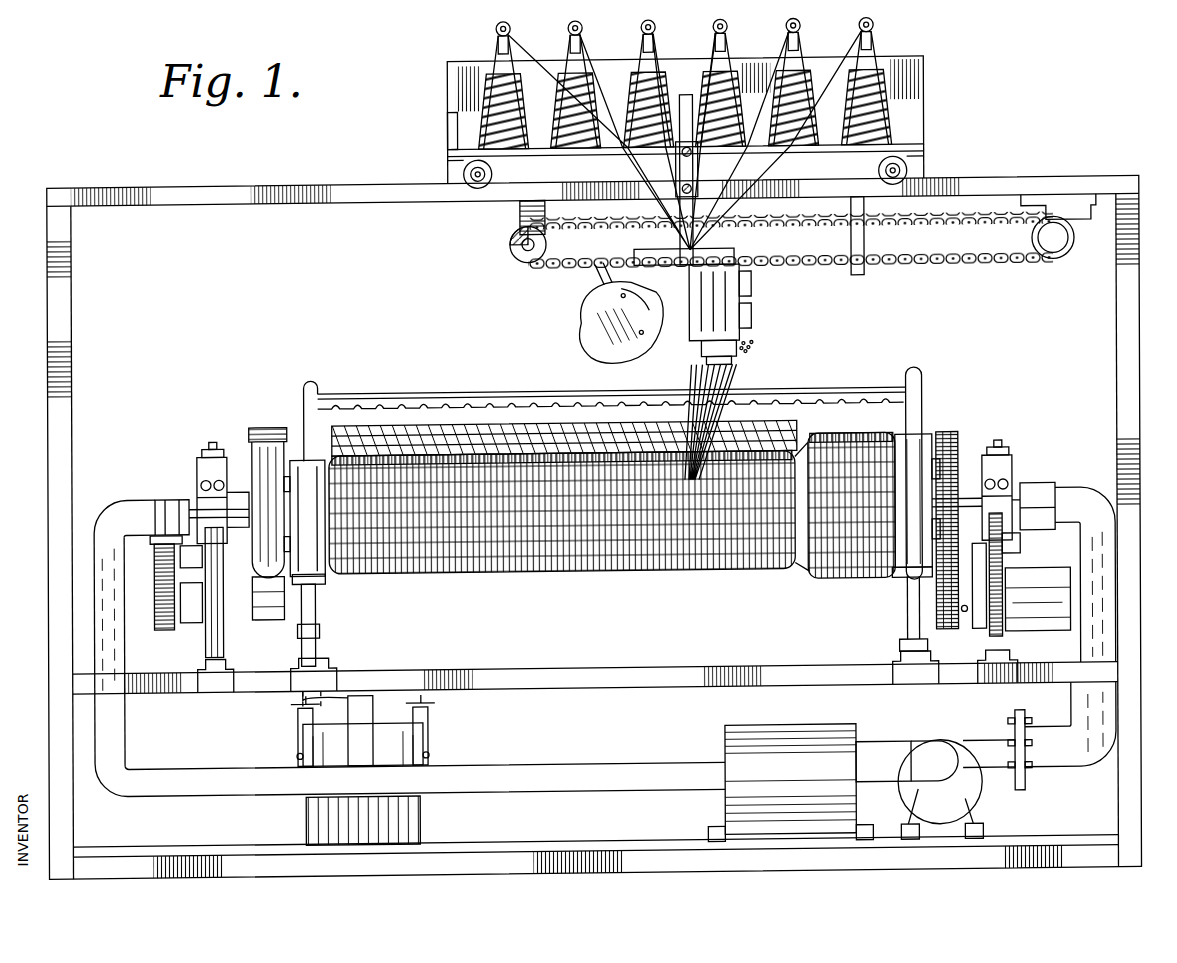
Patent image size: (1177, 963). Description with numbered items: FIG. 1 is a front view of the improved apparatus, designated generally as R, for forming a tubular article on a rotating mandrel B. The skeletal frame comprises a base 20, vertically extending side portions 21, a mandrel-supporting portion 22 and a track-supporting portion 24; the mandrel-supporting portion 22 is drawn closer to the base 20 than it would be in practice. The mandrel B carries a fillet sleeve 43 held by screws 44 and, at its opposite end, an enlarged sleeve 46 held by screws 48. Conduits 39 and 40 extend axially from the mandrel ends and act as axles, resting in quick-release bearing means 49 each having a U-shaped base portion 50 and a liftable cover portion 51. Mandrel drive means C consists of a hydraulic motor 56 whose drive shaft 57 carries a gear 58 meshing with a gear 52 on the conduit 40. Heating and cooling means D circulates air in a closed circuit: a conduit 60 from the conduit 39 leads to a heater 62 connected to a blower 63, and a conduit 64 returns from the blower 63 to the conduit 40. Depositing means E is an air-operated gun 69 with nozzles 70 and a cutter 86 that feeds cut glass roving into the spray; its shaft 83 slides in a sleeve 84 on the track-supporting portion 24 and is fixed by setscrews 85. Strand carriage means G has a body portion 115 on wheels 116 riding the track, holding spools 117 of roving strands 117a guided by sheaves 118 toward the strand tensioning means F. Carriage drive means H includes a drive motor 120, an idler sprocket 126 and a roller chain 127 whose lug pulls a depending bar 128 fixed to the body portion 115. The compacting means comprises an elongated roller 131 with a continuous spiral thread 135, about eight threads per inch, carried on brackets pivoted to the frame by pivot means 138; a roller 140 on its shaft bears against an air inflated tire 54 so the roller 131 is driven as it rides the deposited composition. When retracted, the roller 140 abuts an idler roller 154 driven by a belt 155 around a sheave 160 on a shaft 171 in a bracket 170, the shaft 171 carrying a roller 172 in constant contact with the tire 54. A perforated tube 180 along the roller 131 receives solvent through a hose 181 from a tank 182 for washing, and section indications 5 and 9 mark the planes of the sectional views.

The base 20 is at (535, 856).
The vertically extending side portions 21 is at (46, 386).
The mandrel-supporting portion 22 is at (540, 690).
The track-supporting portion 24 is at (1010, 200).
The conduit 39 is at (178, 504).
The conduit 40 is at (1030, 495).
The fillet sleeve 43 is at (322, 585).
The screws 44 is at (300, 542).
The sleeve 46 is at (893, 585).
The screws 48 is at (902, 532).
The bearing means 49 is at (183, 444).
The U-shaped base portion 50 is at (1018, 552).
The cover portion 51 is at (196, 470).
The gear 52 is at (948, 445).
The air inflated tire 54 is at (250, 446).
The motor 56 is at (1040, 592).
The drive shaft 57 is at (986, 648).
The gear 58 is at (970, 620).
The conduit 60 is at (97, 636).
The heater 62 is at (785, 748).
The blower 63 is at (945, 752).
The conduit 64 is at (1113, 622).
The gun 69 is at (740, 300).
The nozzle 70 is at (735, 356).
The shaft 83 is at (688, 103).
The sleeve 84 is at (675, 174).
The setscrews 85 is at (694, 172).
The cutter 86 is at (586, 344).
The body portion 115 is at (918, 130).
The wheels 116 is at (462, 178).
The spools 117 is at (882, 98).
The roving strands 117a is at (744, 362).
The sheaves 118 is at (873, 38).
The drive motor 120 is at (1062, 268).
The idler sprocket 126 is at (509, 255).
The roller chain 127 is at (535, 245).
The depending bar 128 is at (866, 248).
The elongated roller 131 is at (796, 433).
The continuous spiral thread 135 is at (390, 440).
The pivot means 138 is at (322, 660).
The roller 140 is at (283, 440).
The idler roller 154 is at (165, 546).
The belt 155 is at (182, 568).
The sheave 160 is at (182, 594).
The bracket 170 is at (205, 656).
The shaft 171 is at (170, 632).
The roller 172 is at (313, 612).
The perforated tube 180 is at (825, 398).
The hose 181 is at (300, 706).
The tank 182 is at (420, 828).
The section line 5 is at (237, 440).
The section line 9 is at (620, 256).
The mandrel B is at (406, 595).
The mandrel drive means C is at (1072, 476).
The heating and cooling means D is at (670, 752).
The means for depositing the material E is at (568, 332).
The strand tensioning means F is at (780, 311).
The strand carriage means G is at (981, 104).
The strand carriage drive means H is at (1014, 290).
The embodiment of the invention R is at (46, 130).